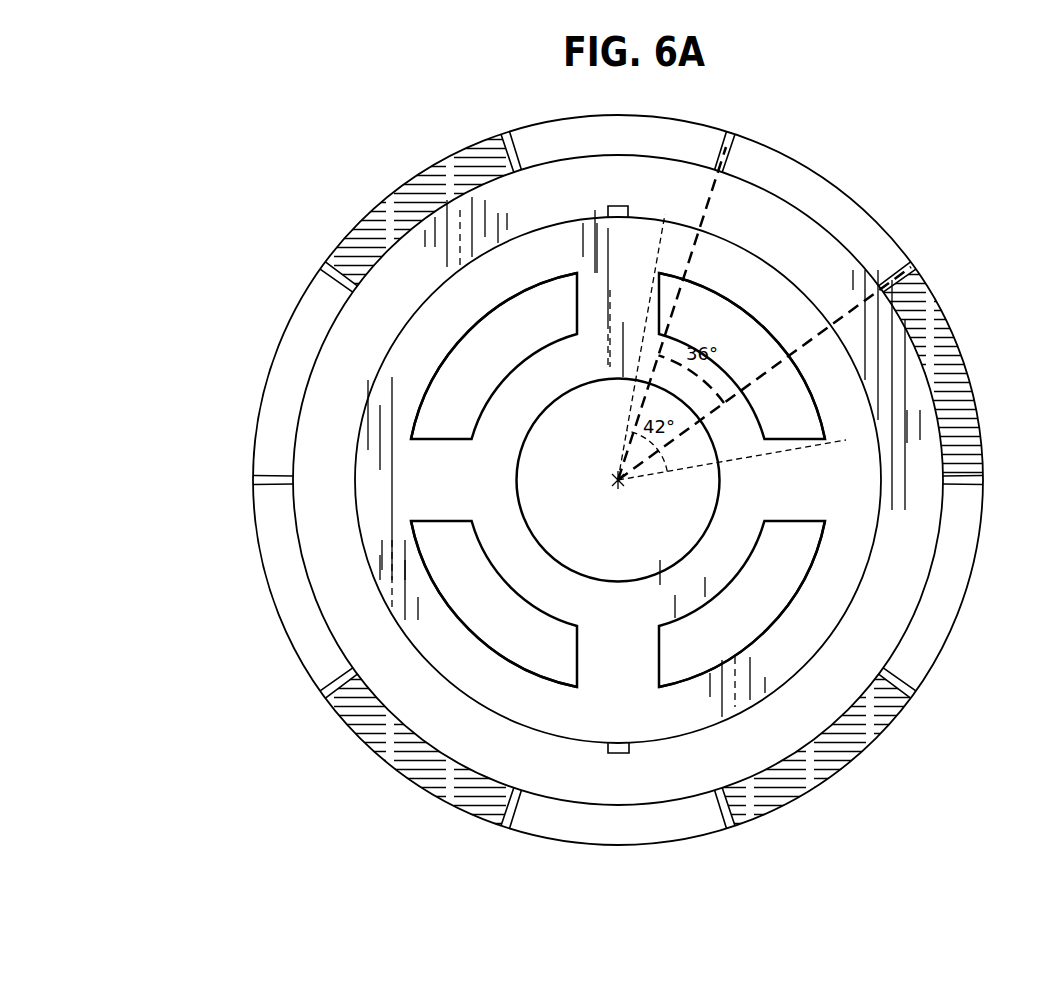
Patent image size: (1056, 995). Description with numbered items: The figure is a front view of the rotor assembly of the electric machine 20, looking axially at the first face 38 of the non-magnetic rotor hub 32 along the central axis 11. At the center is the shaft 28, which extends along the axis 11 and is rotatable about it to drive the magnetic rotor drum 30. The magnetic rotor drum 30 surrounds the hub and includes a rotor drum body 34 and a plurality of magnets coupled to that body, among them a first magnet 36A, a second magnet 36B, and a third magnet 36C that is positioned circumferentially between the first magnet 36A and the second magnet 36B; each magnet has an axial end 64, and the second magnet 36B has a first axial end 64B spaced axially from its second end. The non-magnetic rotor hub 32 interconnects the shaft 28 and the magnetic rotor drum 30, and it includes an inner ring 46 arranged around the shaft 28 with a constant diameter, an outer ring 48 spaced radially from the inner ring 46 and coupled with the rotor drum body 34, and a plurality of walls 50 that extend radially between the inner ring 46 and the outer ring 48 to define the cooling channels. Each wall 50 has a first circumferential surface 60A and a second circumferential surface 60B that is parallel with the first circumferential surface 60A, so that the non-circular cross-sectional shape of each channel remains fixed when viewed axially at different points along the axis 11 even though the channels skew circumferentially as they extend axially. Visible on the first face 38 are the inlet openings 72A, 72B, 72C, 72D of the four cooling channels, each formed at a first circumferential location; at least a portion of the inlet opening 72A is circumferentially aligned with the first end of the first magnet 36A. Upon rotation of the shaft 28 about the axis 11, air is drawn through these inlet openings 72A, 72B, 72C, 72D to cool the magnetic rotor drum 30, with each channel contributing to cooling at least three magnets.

The central axis 11 is at (617, 481).
The electric machine 20 is at (205, 132).
The shaft 28 is at (540, 517).
The magnetic rotor drum 30 is at (215, 452).
The non-magnetic rotor hub 32 is at (437, 675).
The rotor drum body 34 is at (313, 459).
The first magnet 36A is at (838, 220).
The second magnet 36B is at (378, 222).
The third magnet 36C is at (556, 143).
The first face 38 is at (632, 727).
The inner ring 46 is at (437, 612).
The outer ring 48 is at (477, 687).
The walls 50 is at (628, 312).
The first circumferential surface 60A is at (578, 300).
The second circumferential surface 60B is at (662, 300).
The axial end 64 is at (842, 214).
The first axial end of the second magnet 64B is at (420, 190).
The inlet opening 72A is at (787, 387).
The inlet opening 72B is at (713, 627).
The inlet opening 72C is at (540, 650).
The inlet opening 72D is at (433, 391).